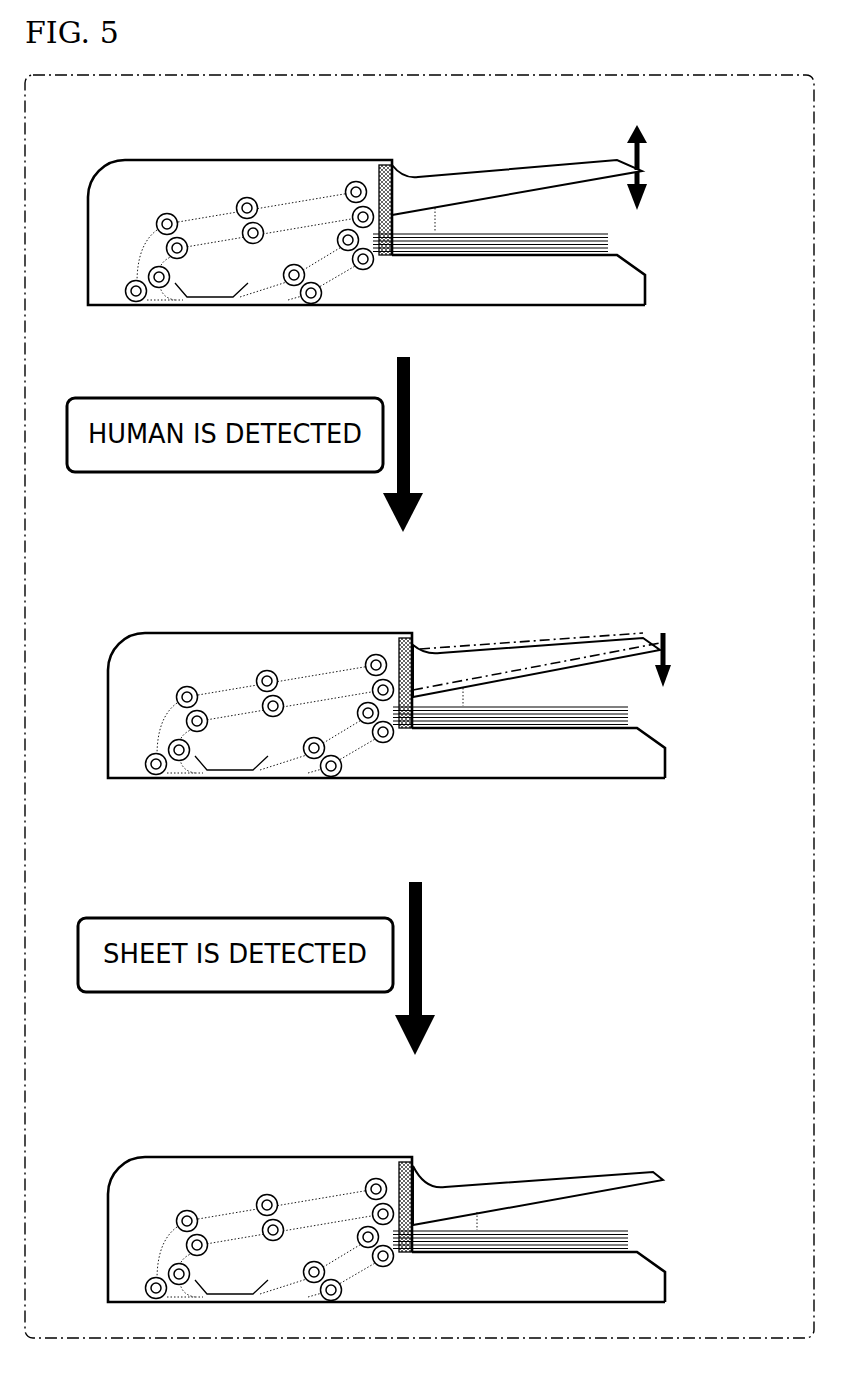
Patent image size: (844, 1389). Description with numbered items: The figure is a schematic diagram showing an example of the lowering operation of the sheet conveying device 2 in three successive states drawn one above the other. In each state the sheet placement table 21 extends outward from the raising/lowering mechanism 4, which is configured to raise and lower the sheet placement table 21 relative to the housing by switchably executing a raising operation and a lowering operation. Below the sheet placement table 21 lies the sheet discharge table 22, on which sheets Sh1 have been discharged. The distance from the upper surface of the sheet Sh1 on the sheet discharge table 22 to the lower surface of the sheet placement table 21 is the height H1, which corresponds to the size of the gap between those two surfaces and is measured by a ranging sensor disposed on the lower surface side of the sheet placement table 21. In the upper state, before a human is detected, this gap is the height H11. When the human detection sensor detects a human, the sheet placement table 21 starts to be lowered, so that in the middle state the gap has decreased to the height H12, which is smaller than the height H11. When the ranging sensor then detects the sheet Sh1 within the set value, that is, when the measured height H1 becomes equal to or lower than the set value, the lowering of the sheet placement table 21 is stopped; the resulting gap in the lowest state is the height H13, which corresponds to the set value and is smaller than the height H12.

The sheet conveying device 2 is at (197, 158).
The raising/lowering mechanism 4 is at (388, 164).
The sheet placement table 21 is at (532, 166).
The sheet discharge table 22 is at (617, 255).
The sheet Sh1 is at (507, 253).
The height H1 is at (546, 719).
The height before human detection H11 is at (433, 222).
The height after human detection H12 is at (461, 700).
The height upon sheet detection H13 is at (475, 1220).